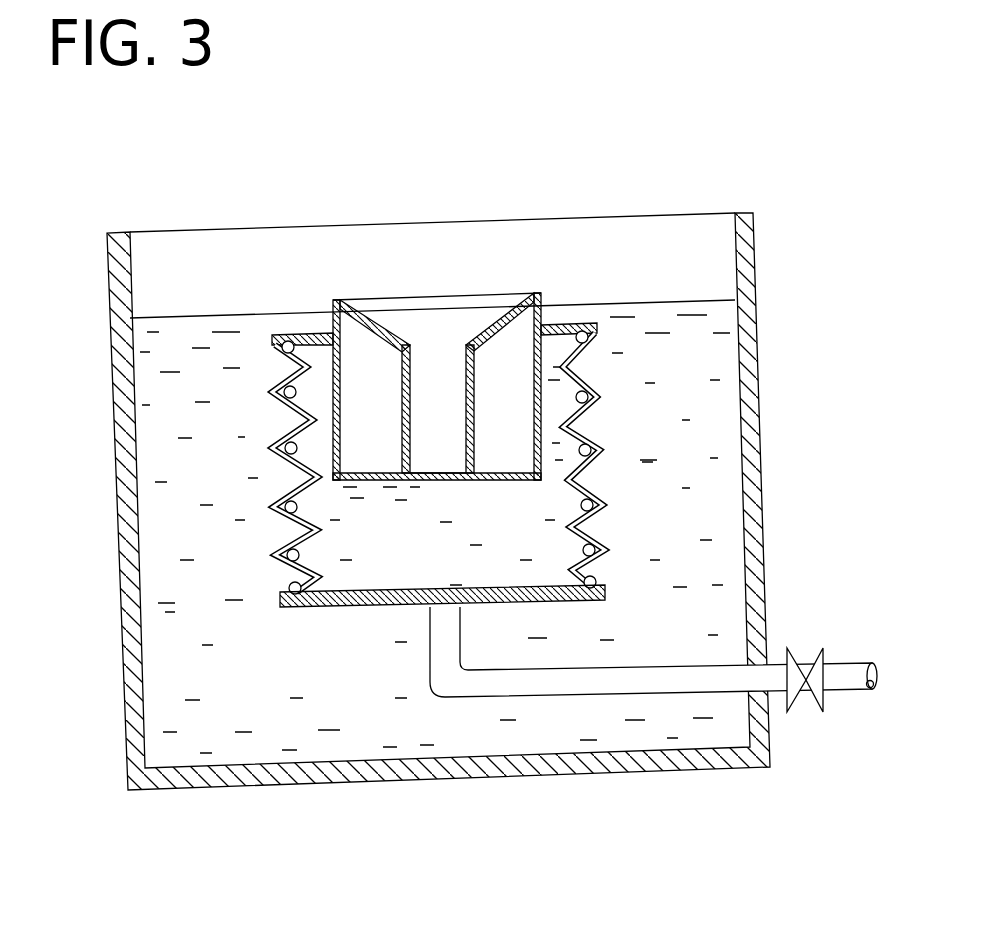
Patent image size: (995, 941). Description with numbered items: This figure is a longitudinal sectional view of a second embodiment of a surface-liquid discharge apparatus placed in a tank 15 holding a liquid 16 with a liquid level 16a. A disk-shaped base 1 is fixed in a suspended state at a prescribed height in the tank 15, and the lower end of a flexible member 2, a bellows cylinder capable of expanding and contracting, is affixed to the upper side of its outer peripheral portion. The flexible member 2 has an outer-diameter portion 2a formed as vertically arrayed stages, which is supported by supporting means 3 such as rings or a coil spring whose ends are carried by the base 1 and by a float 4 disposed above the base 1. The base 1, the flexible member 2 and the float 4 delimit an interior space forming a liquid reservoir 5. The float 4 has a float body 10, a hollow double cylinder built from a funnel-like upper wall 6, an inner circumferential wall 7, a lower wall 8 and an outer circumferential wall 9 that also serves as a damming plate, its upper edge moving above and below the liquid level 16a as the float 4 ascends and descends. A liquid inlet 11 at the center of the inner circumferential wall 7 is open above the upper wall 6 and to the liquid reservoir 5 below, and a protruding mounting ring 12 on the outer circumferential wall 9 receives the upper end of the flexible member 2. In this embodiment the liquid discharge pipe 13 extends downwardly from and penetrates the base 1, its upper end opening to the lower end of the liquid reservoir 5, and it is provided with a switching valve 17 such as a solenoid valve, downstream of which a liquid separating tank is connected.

The base 1 is at (307, 608).
The flexible member 2 is at (590, 422).
The outer-diameter portion 2a is at (273, 558).
The supporting means 3 is at (318, 510).
The float 4 is at (545, 296).
The liquid reservoir 5 is at (385, 577).
The upper wall 6 is at (478, 345).
The inner circumferential wall 7 is at (385, 375).
The lower wall 8 is at (506, 475).
The outer circumferential wall 9 is at (322, 315).
The float body 10 is at (544, 398).
The liquid inlet 11 is at (442, 455).
The mounting ring 12 is at (292, 337).
The liquid discharge pipe 13 is at (597, 672).
The tank 15 is at (760, 410).
The liquid 16 is at (707, 478).
The liquid level 16a is at (657, 303).
The switching valve 17 is at (810, 655).